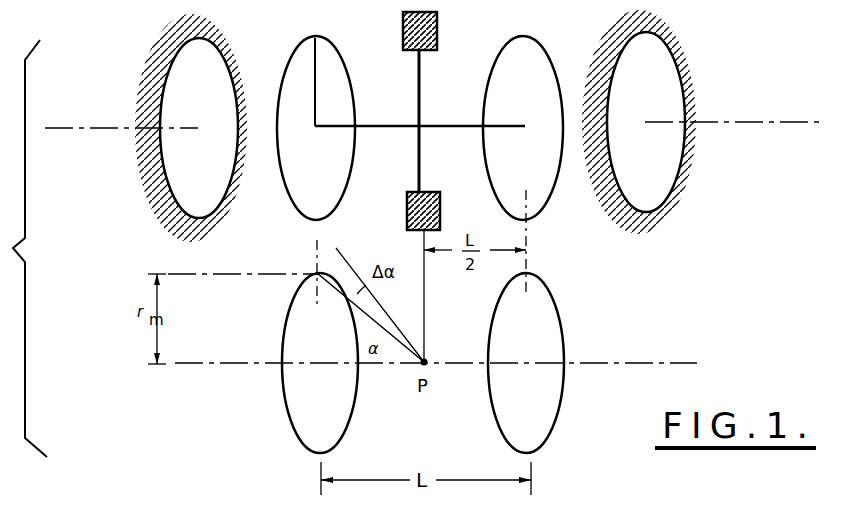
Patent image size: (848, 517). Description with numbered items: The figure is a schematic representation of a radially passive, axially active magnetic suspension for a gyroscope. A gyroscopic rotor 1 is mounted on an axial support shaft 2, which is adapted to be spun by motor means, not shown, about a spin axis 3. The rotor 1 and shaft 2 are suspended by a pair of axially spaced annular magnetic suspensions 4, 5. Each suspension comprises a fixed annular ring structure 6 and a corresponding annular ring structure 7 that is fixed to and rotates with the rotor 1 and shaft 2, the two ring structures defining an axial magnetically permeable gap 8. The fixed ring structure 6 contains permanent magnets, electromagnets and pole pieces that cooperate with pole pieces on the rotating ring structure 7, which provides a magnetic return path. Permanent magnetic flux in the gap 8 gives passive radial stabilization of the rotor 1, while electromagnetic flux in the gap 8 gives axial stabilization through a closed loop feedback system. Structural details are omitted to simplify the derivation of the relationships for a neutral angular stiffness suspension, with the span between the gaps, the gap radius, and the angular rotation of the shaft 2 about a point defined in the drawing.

The gyroscopic rotor 1 is at (408, 200).
The axial support shaft 2 is at (446, 125).
The spin axis 3 is at (88, 128).
The annular magnetic suspension 4 is at (152, 143).
The annular magnetic suspension 5 is at (702, 208).
The fixed annular ring structure 6 is at (212, 53).
The annular ring structure 7 is at (341, 199).
The axial magnetically permeable gap 8 is at (256, 185).